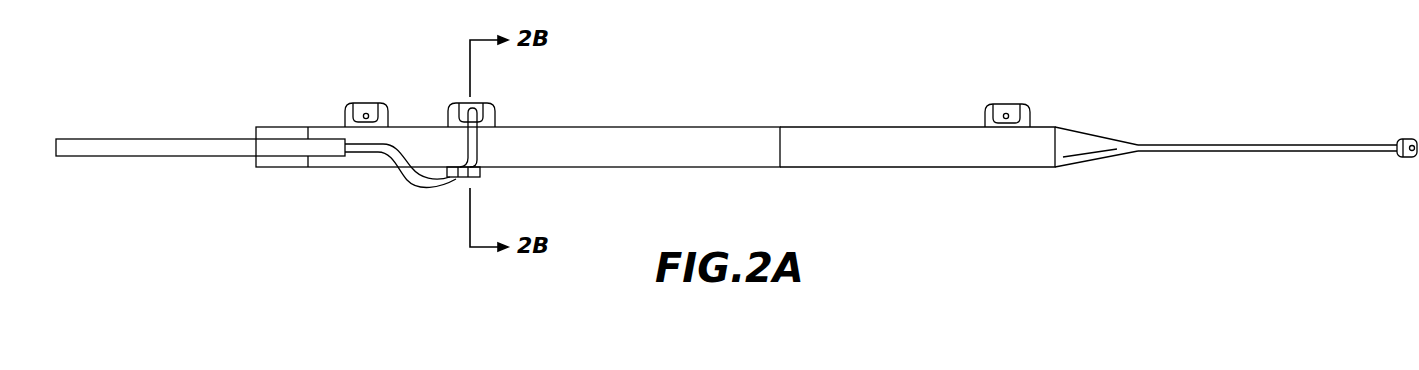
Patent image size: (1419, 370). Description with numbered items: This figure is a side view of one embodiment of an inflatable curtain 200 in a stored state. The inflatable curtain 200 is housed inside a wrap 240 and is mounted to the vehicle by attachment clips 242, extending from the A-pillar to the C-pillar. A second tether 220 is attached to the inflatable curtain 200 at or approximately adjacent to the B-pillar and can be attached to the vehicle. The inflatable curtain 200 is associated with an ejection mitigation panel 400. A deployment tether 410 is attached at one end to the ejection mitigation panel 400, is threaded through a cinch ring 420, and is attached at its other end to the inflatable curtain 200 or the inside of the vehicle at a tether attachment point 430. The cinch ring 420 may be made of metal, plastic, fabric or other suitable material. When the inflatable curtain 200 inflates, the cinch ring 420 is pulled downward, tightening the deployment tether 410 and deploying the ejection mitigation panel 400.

The inflatable curtain 200 is at (650, 135).
The second tether 220 is at (1313, 140).
The wrap 240 is at (856, 123).
The attachment clips 242 is at (1023, 102).
The ejection mitigation panel 400 is at (160, 136).
The deployment tether 410 is at (405, 180).
The cinch ring 420 is at (465, 180).
The tether attachment point 430 is at (480, 110).